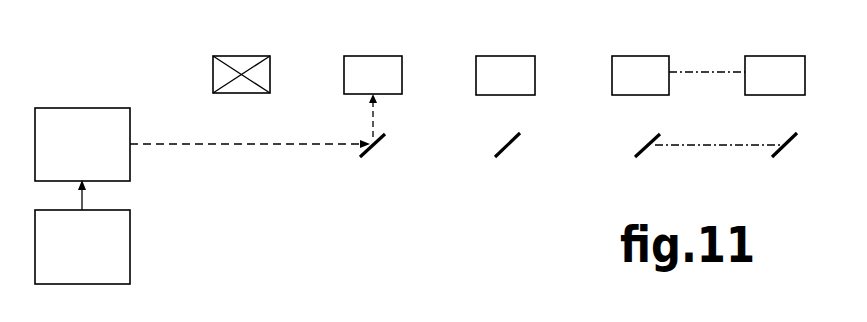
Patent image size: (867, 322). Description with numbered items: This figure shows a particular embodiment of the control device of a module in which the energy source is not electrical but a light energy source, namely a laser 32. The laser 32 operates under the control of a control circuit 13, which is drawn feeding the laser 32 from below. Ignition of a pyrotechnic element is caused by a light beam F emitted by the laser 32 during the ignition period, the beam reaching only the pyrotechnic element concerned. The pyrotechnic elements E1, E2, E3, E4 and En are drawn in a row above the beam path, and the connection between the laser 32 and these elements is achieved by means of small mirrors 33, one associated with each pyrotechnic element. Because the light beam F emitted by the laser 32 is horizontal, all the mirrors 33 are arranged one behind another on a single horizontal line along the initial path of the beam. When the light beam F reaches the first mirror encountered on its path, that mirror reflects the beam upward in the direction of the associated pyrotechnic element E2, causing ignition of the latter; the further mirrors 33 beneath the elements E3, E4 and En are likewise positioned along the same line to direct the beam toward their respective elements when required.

The laser 32 is at (82, 144).
The control circuit 13 is at (82, 232).
The light beam F is at (243, 146).
The pyrotechnic element E1 is at (245, 62).
The pyrotechnic element E2 is at (382, 68).
The pyrotechnic element E3 is at (510, 70).
The pyrotechnic element E4 is at (643, 71).
The pyrotechnic element En is at (773, 66).
The mirrors 33 is at (645, 144).